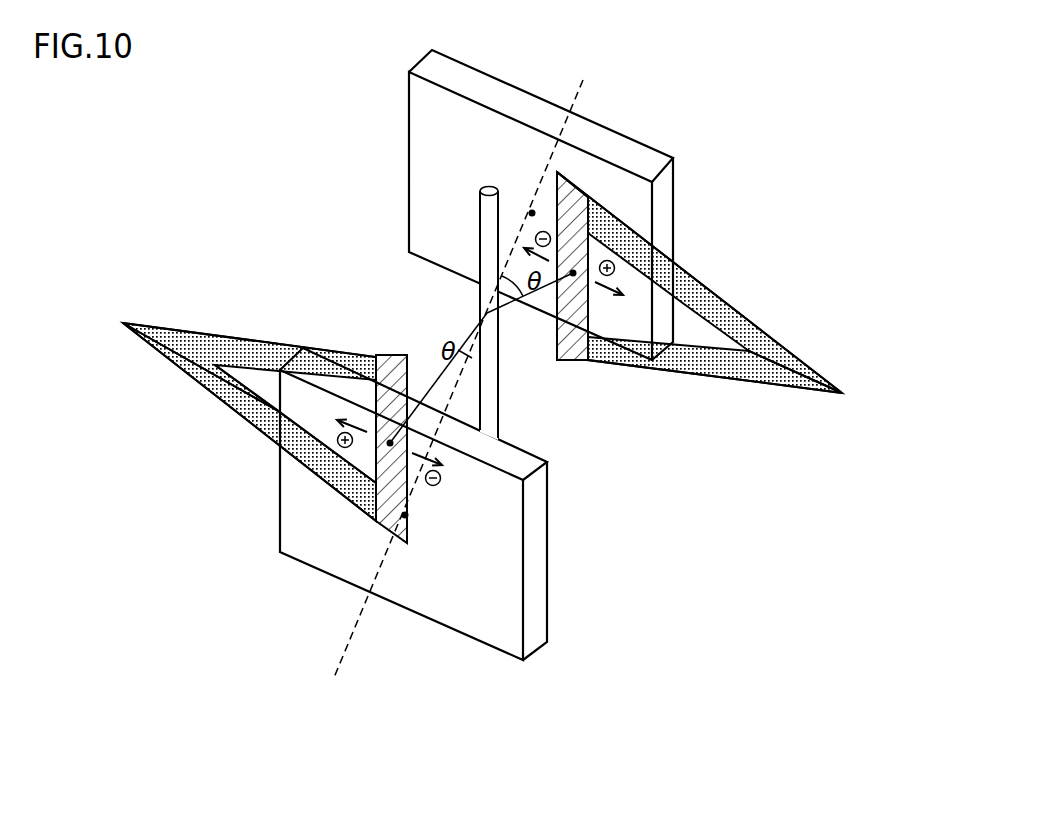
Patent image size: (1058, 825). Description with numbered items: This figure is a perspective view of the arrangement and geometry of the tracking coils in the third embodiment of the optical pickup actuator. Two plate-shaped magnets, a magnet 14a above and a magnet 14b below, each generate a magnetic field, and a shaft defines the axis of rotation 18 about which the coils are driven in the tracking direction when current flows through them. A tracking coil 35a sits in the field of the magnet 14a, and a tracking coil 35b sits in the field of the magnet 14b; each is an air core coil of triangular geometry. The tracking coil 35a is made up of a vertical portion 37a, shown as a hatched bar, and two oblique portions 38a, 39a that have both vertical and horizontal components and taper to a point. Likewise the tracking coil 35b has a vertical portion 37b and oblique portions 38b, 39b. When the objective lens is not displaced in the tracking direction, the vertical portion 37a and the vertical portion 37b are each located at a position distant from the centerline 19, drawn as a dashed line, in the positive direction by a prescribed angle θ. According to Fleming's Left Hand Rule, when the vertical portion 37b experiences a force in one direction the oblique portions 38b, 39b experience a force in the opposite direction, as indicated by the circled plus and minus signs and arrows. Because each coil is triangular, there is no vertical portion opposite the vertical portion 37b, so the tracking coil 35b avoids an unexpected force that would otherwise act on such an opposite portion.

The magnet 14a is at (605, 145).
The magnet 14b is at (510, 605).
The axis of rotation 18 is at (480, 200).
The centerline 19 is at (355, 625).
The tracking coil 35a is at (704, 372).
The tracking coil 35b is at (272, 347).
The vertical portion 37a is at (573, 355).
The vertical portion 37b is at (393, 369).
The oblique portion 38a is at (717, 305).
The oblique portion 38b is at (352, 356).
The oblique portion 39a is at (662, 366).
The oblique portion 39b is at (252, 414).